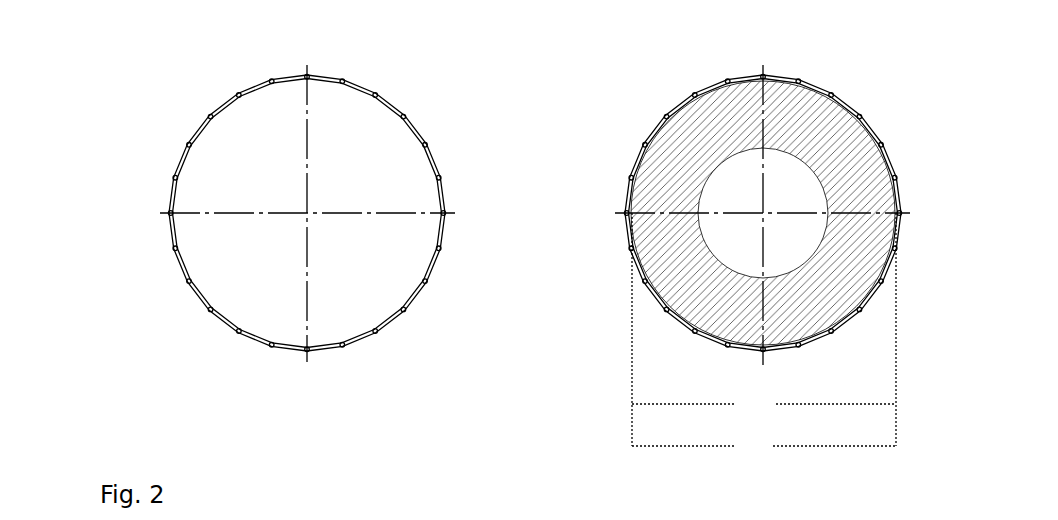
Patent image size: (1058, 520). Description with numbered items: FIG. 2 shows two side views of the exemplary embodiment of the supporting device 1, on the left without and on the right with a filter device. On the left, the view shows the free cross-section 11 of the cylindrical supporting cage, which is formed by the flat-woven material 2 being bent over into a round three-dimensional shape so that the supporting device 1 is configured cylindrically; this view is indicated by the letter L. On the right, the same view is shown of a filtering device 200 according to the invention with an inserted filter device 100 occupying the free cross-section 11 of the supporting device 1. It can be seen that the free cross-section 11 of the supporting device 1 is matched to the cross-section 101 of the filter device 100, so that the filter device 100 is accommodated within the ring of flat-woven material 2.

The supporting device 1 is at (751, 75).
The flat-woven material 2 is at (200, 128).
The free cross-section 11 is at (238, 252).
The filter device 100 is at (837, 125).
The cross-section of the filter device 101 is at (764, 329).
The filtering device 200 is at (737, 195).
The axis / ring L is at (111, 129).